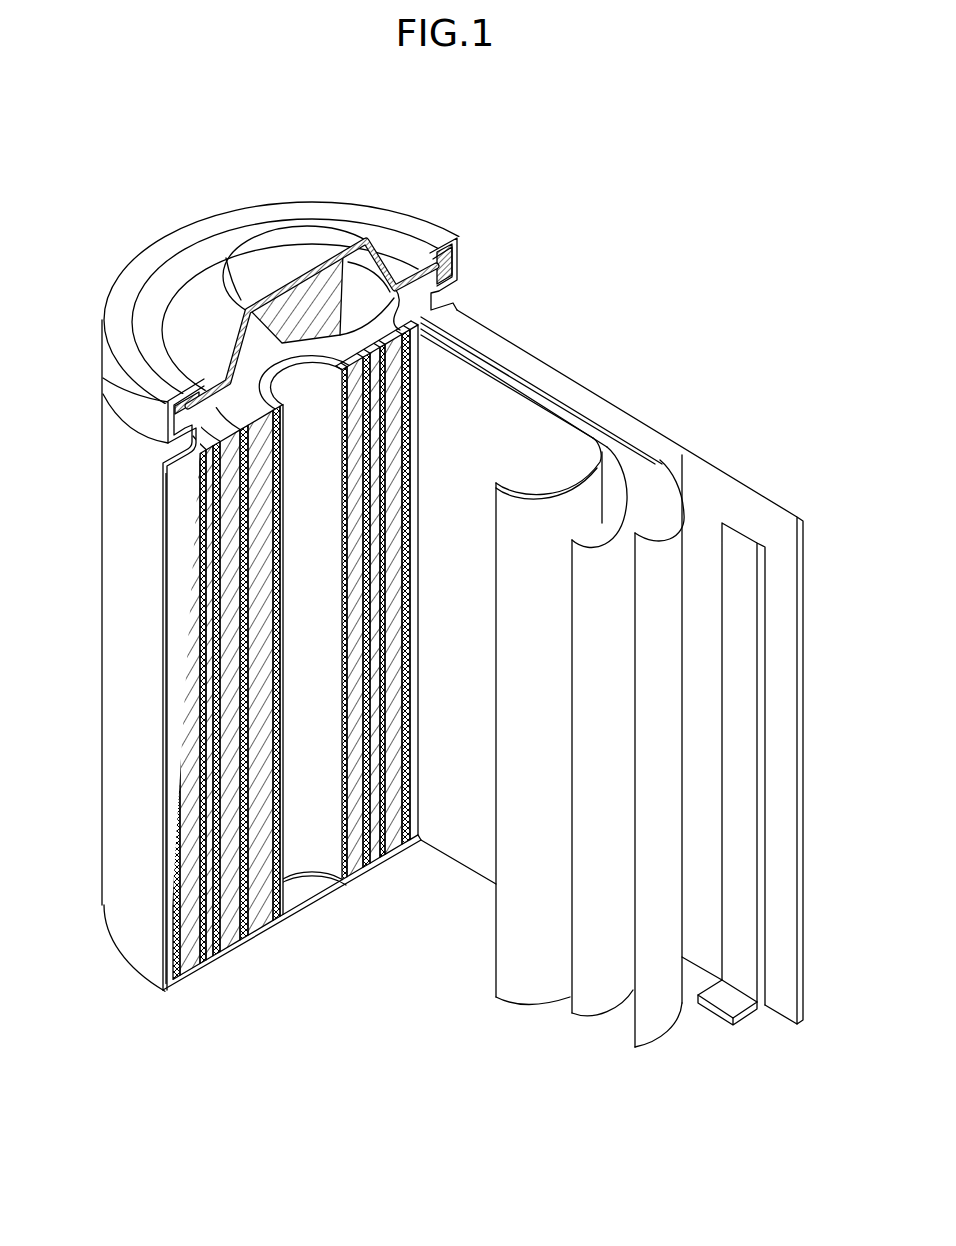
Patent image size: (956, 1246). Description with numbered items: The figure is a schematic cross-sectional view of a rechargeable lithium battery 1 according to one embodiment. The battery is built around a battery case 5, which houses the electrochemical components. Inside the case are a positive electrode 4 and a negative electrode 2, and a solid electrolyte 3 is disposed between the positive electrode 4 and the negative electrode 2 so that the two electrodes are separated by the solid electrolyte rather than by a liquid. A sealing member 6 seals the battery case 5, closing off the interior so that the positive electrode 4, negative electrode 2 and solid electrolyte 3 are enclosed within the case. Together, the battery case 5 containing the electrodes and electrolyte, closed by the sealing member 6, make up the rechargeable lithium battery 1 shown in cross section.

The rechargeable lithium battery 1 is at (656, 234).
The negative electrode 2 is at (759, 494).
The solid electrolyte 3 is at (591, 436).
The positive electrode 4 is at (617, 462).
The battery case 5 is at (100, 733).
The sealing member 6 is at (278, 248).